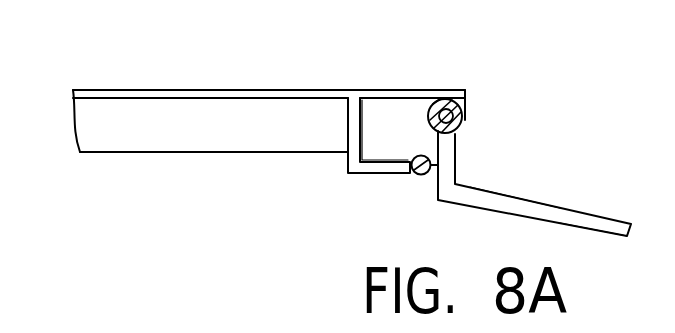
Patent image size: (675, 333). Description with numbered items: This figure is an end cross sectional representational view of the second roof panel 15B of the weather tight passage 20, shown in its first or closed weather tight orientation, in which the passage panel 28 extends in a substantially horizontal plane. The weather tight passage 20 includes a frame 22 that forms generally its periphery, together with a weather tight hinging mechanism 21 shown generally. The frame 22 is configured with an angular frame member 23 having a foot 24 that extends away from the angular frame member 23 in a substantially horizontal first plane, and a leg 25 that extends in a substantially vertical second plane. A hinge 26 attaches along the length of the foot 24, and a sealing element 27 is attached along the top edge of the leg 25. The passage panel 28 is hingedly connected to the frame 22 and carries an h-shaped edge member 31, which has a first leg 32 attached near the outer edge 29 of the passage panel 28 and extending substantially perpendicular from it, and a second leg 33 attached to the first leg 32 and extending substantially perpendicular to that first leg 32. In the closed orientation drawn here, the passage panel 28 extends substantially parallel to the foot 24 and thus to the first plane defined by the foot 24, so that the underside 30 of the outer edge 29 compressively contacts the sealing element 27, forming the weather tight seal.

The second roof panel 15B is at (225, 117).
The weather tight passage 20 is at (328, 72).
The weather tight hinging mechanism 21 is at (449, 66).
The frame 22 is at (468, 172).
The angular frame member 23 is at (499, 210).
The foot 24 is at (428, 178).
The leg 25 is at (478, 187).
The hinge 26 is at (412, 174).
The sealing element 27 is at (468, 113).
The passage panel 28 is at (90, 88).
The outer edge 29 is at (464, 91).
The underside 30 is at (388, 100).
The h-shaped edge member 31 is at (316, 181).
The first leg 32 is at (347, 124).
The second leg 33 is at (405, 162).